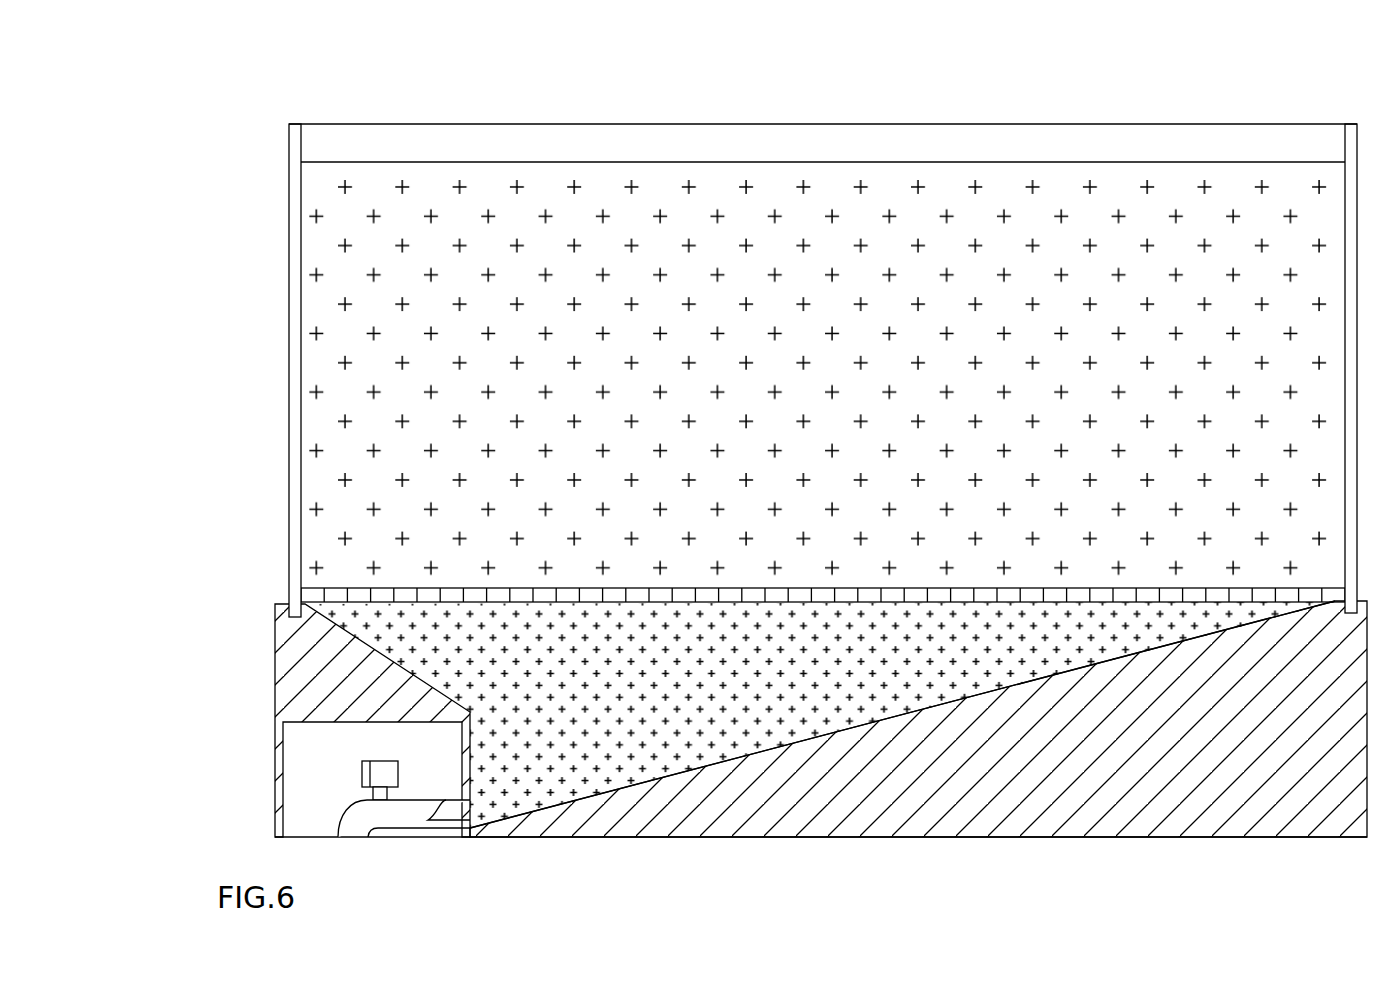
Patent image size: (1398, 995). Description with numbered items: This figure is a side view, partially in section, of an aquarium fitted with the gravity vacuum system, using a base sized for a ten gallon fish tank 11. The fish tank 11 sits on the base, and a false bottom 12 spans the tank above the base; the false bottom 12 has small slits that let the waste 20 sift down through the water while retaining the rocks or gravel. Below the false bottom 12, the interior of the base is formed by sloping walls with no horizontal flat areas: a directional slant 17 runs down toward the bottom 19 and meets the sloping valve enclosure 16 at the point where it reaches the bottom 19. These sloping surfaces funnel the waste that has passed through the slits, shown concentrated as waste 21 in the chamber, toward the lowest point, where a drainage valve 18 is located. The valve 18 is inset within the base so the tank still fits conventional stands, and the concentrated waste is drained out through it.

The fish tank 11 is at (293, 315).
The false bottom 12 is at (345, 598).
The sloping valve enclosure 16 is at (340, 628).
The directional slant 17 is at (938, 706).
The drainage valve 18 is at (365, 820).
The bottom 19 is at (782, 837).
The waste 20 is at (545, 215).
The concentrated waste 21 is at (838, 660).